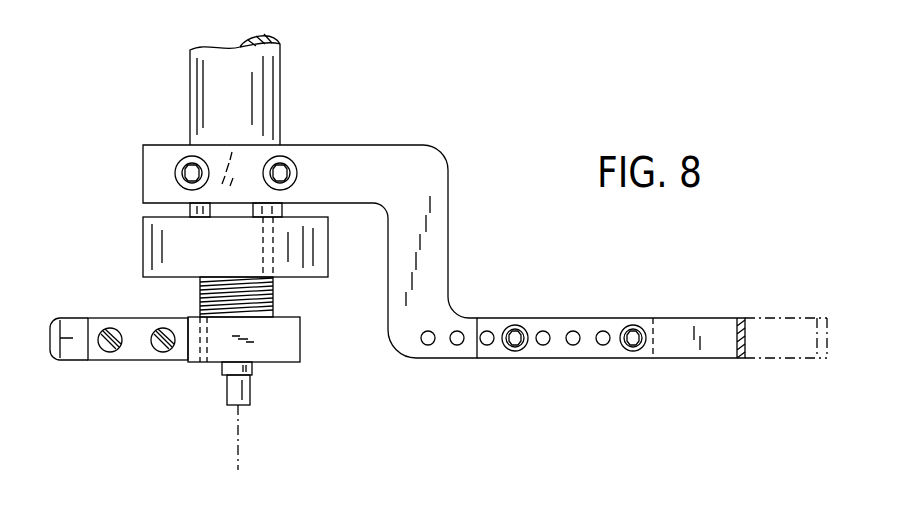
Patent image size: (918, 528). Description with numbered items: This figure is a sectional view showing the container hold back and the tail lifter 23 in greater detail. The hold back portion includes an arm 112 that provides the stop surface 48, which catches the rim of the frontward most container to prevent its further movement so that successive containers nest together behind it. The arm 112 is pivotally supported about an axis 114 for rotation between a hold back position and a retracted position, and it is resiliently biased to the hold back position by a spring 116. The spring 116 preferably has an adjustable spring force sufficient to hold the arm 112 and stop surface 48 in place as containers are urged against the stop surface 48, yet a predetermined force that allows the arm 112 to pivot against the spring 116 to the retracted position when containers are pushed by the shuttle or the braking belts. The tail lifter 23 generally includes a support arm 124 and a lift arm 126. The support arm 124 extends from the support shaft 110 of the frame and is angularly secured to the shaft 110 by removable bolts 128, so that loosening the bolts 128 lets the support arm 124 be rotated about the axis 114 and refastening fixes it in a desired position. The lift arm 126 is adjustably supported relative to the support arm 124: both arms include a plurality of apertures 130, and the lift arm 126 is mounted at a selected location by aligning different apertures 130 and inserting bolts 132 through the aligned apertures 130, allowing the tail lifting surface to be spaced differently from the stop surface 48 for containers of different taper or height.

The tail lifter 23 is at (445, 147).
The stop surface 48 is at (73, 338).
The support shaft 110 is at (282, 97).
The arm 112 is at (77, 360).
The axis 114 is at (240, 460).
The spring 116 is at (200, 302).
The support arm 124 is at (448, 203).
The lift arm 126 is at (610, 318).
The bolts 128 is at (178, 163).
The apertures 130 is at (427, 343).
The bolts 132 is at (512, 320).